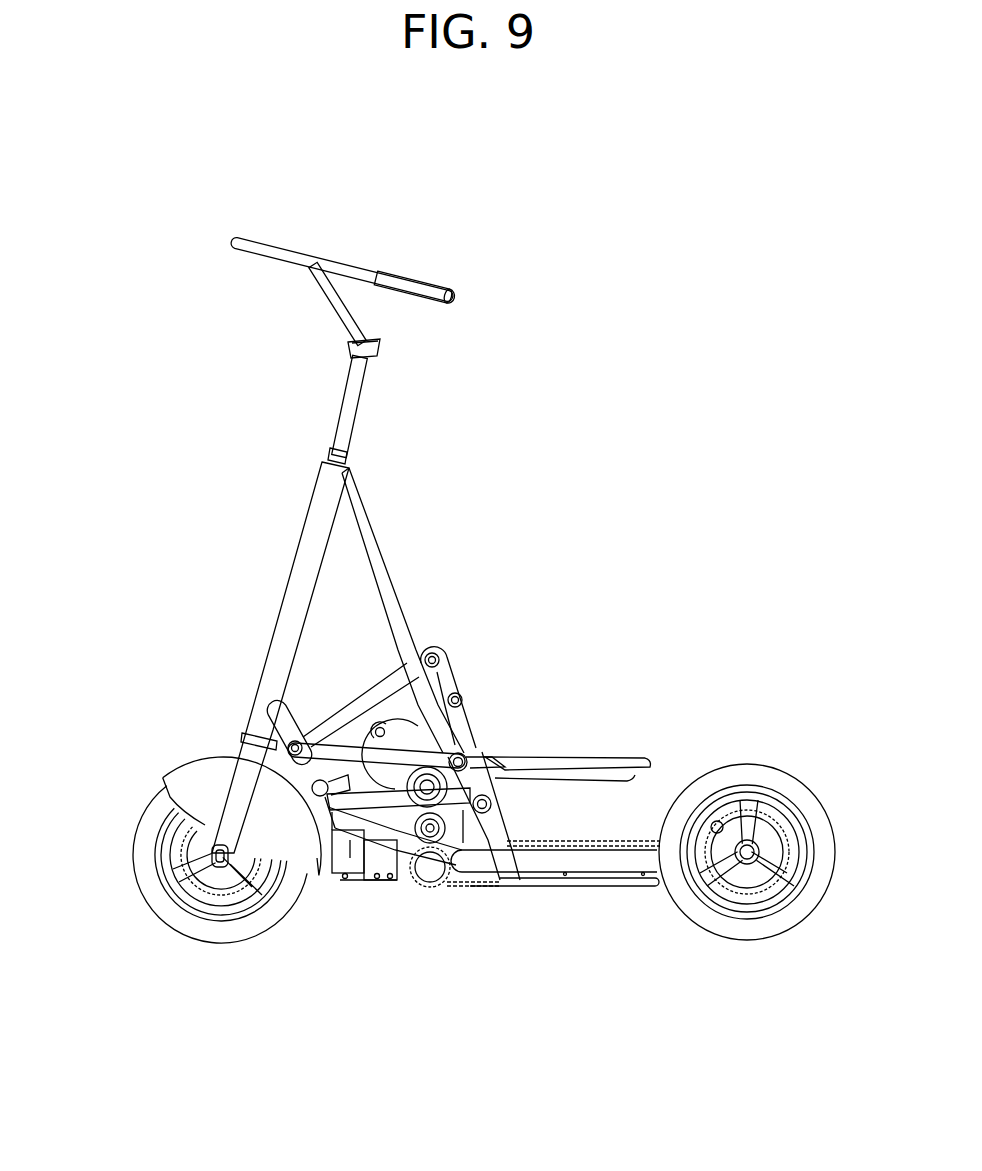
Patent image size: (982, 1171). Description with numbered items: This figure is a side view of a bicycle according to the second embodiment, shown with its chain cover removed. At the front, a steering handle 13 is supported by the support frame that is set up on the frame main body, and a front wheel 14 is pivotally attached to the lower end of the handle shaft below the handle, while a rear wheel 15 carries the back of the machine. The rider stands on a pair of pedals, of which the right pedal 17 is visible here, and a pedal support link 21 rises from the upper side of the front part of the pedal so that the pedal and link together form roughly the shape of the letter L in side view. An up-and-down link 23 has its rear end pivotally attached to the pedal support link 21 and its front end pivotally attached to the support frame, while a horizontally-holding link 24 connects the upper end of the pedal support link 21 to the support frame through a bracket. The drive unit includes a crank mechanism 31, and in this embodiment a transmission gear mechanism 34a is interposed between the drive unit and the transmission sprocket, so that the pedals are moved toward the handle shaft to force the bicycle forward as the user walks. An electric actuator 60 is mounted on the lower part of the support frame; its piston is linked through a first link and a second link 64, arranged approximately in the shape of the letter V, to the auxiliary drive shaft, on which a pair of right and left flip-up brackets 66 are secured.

The steering handle 13 is at (307, 253).
The front wheel 14 is at (172, 915).
The rear wheel 15 is at (767, 773).
The right pedal 17 is at (590, 758).
The pedal support link 21 is at (488, 830).
The up-and-down link 23 is at (397, 870).
The horizontally-holding link 24 is at (407, 753).
The crank mechanism 31 is at (433, 843).
The transmission gear mechanism 34a is at (363, 848).
The electric actuator 60 is at (340, 850).
The second link 64 is at (332, 768).
The flip-up bracket 66 is at (317, 863).